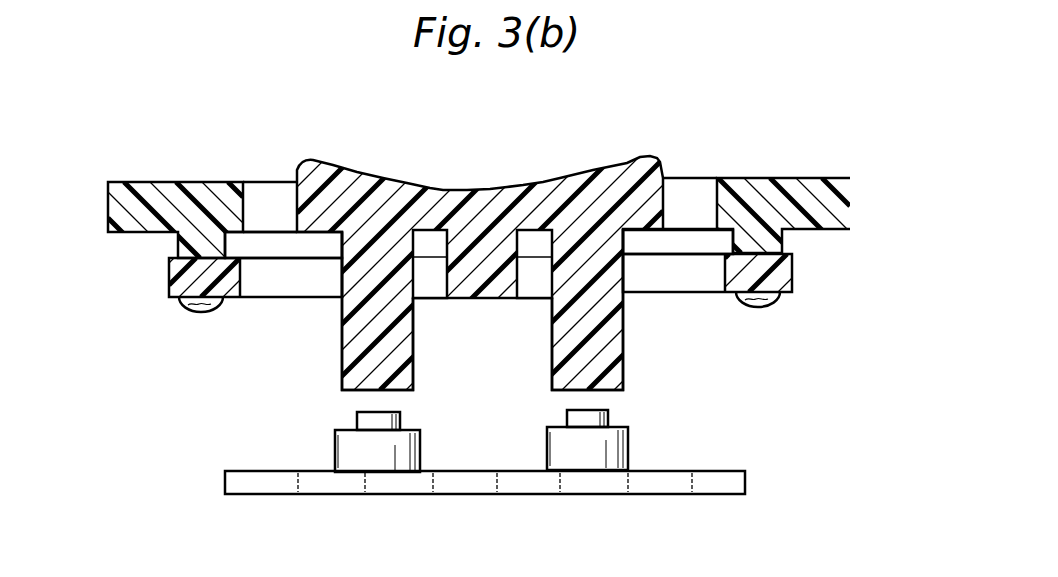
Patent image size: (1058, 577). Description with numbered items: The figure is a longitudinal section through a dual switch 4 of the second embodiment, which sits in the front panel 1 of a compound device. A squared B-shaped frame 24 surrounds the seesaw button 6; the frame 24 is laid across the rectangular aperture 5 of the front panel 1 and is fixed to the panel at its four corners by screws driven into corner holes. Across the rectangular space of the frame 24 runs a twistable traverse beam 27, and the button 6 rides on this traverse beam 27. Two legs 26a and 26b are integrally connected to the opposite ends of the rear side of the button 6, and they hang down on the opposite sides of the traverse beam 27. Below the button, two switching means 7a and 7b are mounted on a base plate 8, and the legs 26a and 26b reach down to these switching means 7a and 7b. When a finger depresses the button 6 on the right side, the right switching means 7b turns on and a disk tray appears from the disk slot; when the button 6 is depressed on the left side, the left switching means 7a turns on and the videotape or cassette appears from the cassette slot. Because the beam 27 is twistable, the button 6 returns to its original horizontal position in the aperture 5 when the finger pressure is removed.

The front panel 1 is at (764, 198).
The dual switch 4 is at (260, 128).
The rectangular aperture 5 is at (692, 194).
The seesaw button 6 is at (487, 251).
The left switching means 7a is at (357, 415).
The right switching means 7b is at (610, 418).
The base plate 8 is at (493, 471).
The squared B-shaped frame 24 is at (785, 276).
The first leg 26a is at (342, 357).
The second leg 26b is at (623, 343).
The twistable traverse beam 27 is at (482, 299).